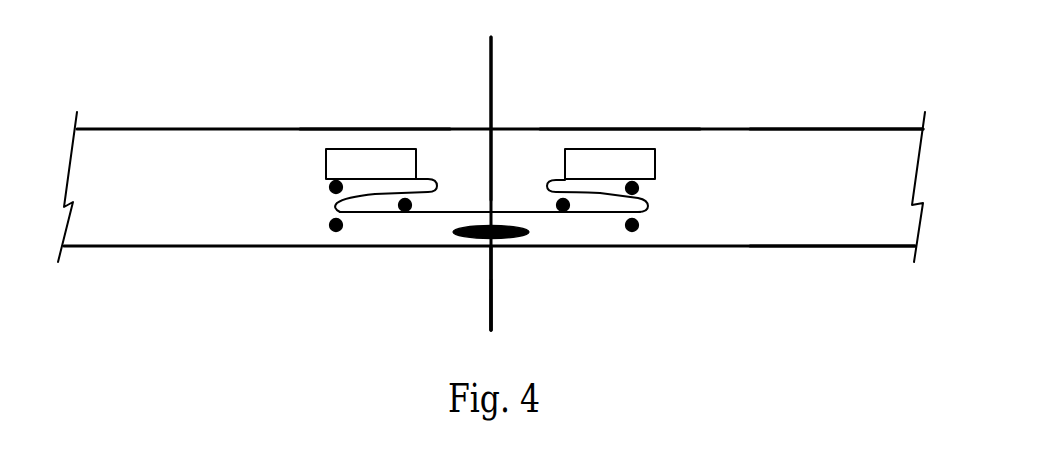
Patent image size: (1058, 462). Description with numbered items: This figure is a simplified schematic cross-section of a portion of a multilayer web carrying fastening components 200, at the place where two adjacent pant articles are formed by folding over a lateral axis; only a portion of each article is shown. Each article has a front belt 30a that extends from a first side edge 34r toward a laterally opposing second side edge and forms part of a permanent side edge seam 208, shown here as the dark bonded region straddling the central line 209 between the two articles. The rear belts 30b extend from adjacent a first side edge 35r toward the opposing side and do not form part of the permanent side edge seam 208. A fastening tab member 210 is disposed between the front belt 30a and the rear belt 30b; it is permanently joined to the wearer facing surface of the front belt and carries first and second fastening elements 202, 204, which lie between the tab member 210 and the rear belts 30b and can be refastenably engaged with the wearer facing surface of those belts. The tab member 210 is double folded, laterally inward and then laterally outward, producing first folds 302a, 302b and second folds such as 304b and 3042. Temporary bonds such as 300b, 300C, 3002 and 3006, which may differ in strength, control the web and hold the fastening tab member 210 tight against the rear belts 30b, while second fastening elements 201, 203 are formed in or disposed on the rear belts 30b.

The fastening component 200 is at (174, 195).
The rear belt 30b is at (85, 247).
The front belt 30a is at (813, 247).
The first side edge of rear belt 35r is at (491, 128).
The first side edge of front belt 34r is at (491, 246).
The cutting line 209 is at (492, 300).
The permanent side edge seam 208 is at (520, 236).
The second fastening element 204 is at (326, 176).
The first fastening element 202 is at (655, 165).
The second fastening element 203 is at (382, 145).
The second fastening element 201 is at (626, 143).
The left fold upper lobe 3042 is at (435, 182).
The second fold 304b is at (548, 182).
The first fold 302a is at (320, 213).
The first fold 302b is at (653, 225).
The fastening tab member 210 is at (323, 212).
The temporary bond 300C is at (333, 226).
The temporary bond 300b is at (405, 207).
The adhesive bead 3002 is at (640, 188).
The adhesive bead 3006 is at (560, 205).